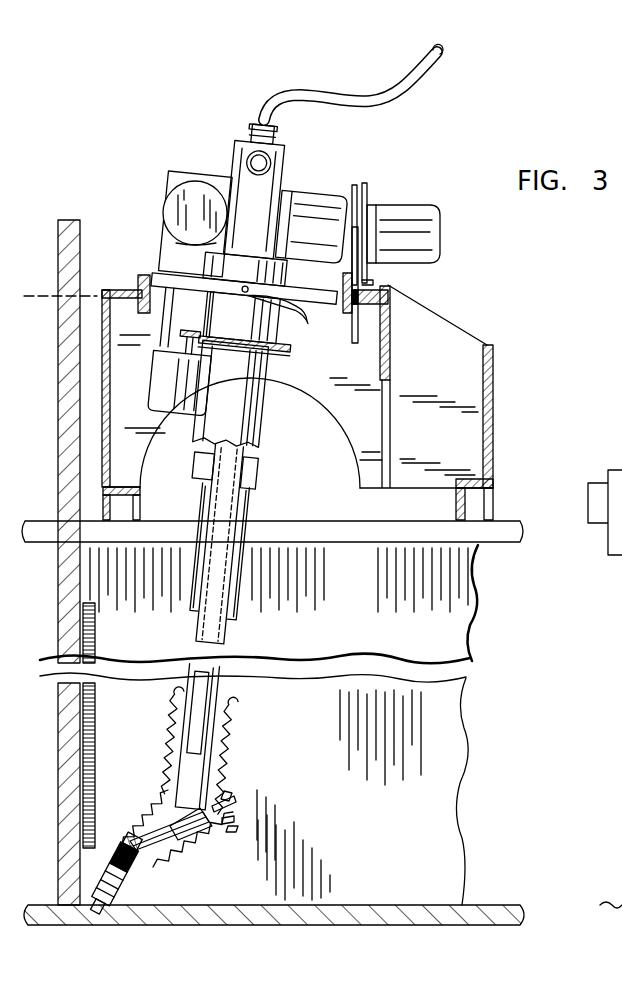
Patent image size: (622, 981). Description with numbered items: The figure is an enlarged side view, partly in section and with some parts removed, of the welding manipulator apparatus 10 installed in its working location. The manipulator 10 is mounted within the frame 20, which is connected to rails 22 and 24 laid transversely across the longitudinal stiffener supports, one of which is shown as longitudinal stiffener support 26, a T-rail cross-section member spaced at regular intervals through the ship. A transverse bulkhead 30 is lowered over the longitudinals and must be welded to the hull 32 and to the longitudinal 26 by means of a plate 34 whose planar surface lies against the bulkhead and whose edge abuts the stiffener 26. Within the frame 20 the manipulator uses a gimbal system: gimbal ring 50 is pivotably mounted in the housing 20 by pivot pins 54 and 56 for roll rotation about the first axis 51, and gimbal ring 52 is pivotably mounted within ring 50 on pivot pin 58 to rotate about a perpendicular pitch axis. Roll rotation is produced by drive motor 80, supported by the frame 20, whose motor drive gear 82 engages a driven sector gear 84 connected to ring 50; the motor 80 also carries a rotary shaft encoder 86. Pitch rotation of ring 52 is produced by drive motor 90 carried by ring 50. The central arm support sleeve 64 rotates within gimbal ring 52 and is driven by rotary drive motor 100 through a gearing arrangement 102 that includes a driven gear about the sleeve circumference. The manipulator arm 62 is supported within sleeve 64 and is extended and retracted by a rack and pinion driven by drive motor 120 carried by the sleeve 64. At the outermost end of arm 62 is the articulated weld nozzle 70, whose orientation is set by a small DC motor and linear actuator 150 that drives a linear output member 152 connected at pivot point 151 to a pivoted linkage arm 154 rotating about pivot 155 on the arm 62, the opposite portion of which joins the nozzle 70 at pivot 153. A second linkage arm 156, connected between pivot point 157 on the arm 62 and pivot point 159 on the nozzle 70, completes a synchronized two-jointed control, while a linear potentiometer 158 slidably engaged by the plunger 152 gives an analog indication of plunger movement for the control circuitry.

The manipulator apparatus 10 is at (443, 132).
The frame 20 is at (102, 363).
The rail 22 is at (102, 505).
The rail 24 is at (494, 506).
The longitudinal stiffener support 26 is at (468, 733).
The transverse bulkhead 30 is at (62, 692).
The hull 32 is at (360, 907).
The plate 34 is at (88, 734).
The gimbal ring 50 is at (152, 278).
The first axis 51 is at (40, 295).
The gimbal ring 52 is at (326, 320).
The pivot pin 54 is at (137, 288).
The pivot pin 56 is at (364, 306).
The pivot pin 58 is at (302, 327).
The manipulator arm 62 is at (230, 632).
The central arm support sleeve 64 is at (270, 429).
The weld nozzle 70 is at (114, 904).
The drive motor 80 is at (410, 212).
The motor drive gear 82 is at (353, 199).
The driven sector gear 84 is at (355, 345).
The rotary shaft encoder 86 is at (367, 188).
The drive motor 90 is at (192, 181).
The rotary drive motor 100 is at (159, 377).
The gearing arrangement 102 is at (198, 316).
The drive motor 120 is at (314, 186).
The linear actuator 150 is at (228, 764).
The pivot point 151 is at (223, 818).
The linear output member 152 is at (235, 802).
The pivot 153 is at (173, 865).
The pivoted linkage arm 154 is at (227, 826).
The pivot 155 is at (176, 767).
The linkage arm 156 is at (162, 826).
The pivot point 157 is at (208, 828).
The linear potentiometer 158 is at (232, 791).
The pivot point 159 is at (128, 843).